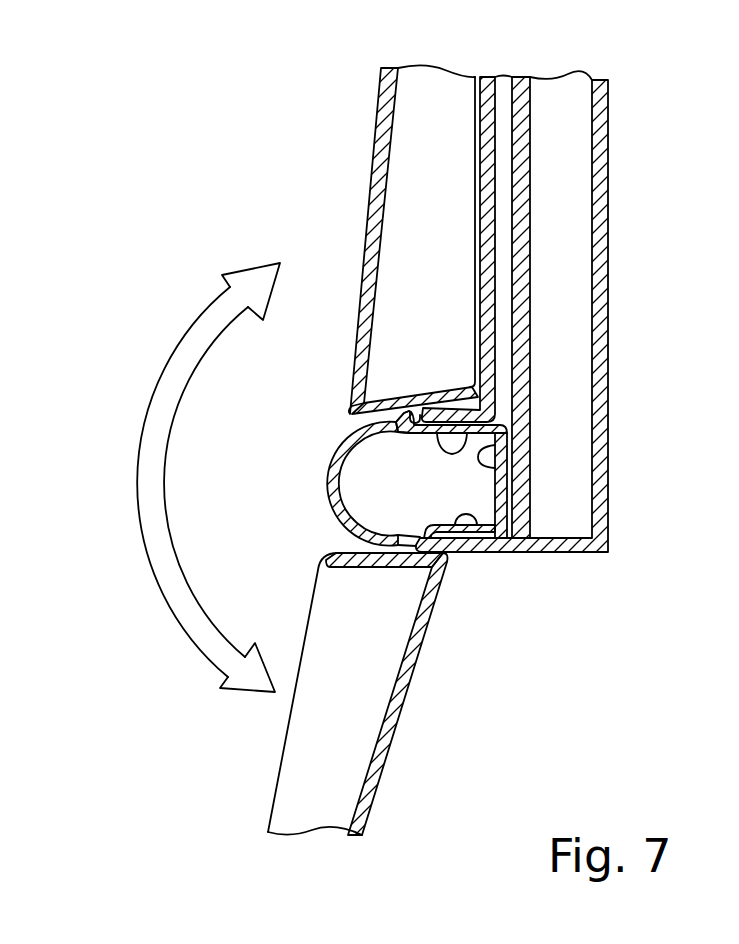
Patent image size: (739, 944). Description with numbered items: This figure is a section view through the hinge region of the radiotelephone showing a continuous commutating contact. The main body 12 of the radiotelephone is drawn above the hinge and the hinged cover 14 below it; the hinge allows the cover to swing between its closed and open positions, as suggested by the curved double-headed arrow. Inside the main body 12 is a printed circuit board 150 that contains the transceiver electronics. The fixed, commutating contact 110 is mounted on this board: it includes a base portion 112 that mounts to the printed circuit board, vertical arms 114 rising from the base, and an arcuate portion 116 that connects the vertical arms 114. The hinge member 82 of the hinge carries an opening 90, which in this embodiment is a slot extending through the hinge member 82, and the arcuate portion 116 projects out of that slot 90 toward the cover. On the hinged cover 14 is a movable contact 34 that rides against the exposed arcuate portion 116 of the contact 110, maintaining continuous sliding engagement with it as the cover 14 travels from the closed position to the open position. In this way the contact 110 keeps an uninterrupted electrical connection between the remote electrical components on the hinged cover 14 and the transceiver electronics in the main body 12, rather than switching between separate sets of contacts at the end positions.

The main body 12 is at (486, 450).
The hinged cover 14 is at (398, 738).
The movable contact 34 is at (349, 380).
The hinge member 82 is at (333, 493).
The opening 90 is at (402, 427).
The commutating contact 110 is at (456, 501).
The base portion 112 is at (500, 445).
The vertical arms 114 is at (466, 442).
The arcuate portion 116 is at (345, 449).
The printed circuit board 150 is at (523, 248).